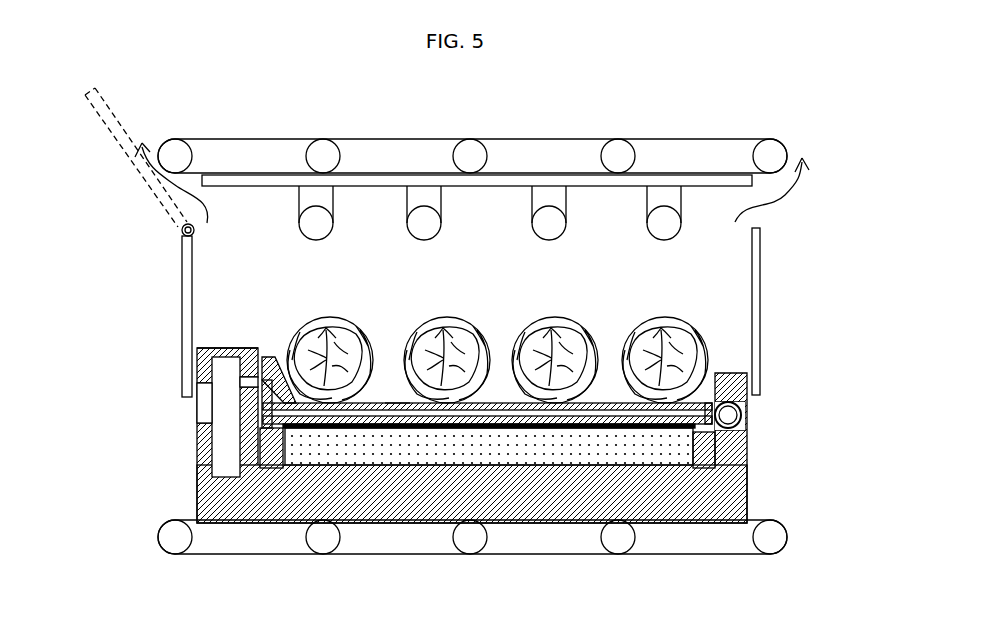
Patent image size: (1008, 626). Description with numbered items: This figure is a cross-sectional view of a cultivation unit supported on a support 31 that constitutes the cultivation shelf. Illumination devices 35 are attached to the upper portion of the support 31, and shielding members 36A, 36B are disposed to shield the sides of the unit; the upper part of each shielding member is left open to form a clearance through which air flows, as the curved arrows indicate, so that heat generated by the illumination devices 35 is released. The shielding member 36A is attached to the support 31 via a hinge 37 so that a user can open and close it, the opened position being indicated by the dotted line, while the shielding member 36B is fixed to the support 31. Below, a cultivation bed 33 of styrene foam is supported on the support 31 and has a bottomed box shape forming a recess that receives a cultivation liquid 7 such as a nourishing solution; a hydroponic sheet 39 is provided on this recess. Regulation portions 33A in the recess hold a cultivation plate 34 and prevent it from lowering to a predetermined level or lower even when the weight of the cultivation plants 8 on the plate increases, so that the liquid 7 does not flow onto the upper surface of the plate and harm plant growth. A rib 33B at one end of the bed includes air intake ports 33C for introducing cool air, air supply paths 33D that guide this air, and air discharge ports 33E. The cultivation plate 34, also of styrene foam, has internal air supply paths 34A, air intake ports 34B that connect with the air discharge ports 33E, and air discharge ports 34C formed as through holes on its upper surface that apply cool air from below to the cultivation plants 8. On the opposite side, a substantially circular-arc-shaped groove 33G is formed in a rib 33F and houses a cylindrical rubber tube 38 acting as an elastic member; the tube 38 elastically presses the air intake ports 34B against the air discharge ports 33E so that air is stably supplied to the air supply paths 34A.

The support 31 is at (503, 157).
The illumination device 35 is at (663, 222).
The hinge 37 is at (182, 228).
The shielding member 36A is at (187, 300).
The shielding member 36B is at (762, 257).
The cultivation bed 33 is at (175, 467).
The regulation portion 33A is at (268, 467).
The rib 33B is at (200, 352).
The air intake port 33C is at (208, 408).
The air supply path 33D is at (232, 463).
The air discharge port 33E is at (252, 382).
The rib 33F is at (747, 375).
The groove 33G is at (745, 432).
The tube 38 is at (728, 415).
The hydroponic sheet 39 is at (652, 468).
The cultivation plate 34 is at (613, 402).
The air supply path 34A is at (485, 430).
The air intake port 34B is at (272, 357).
The air discharge port 34C is at (372, 372).
The cultivation liquid 7 is at (547, 452).
The cultivation plant 8 is at (657, 338).